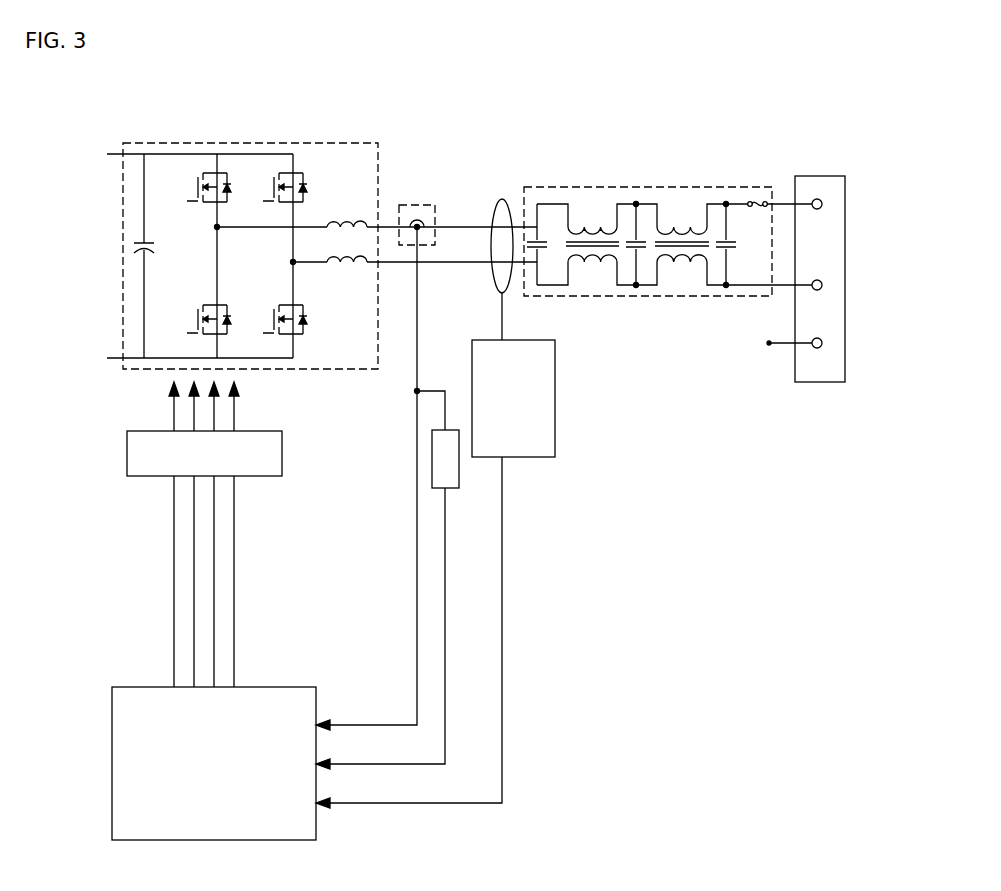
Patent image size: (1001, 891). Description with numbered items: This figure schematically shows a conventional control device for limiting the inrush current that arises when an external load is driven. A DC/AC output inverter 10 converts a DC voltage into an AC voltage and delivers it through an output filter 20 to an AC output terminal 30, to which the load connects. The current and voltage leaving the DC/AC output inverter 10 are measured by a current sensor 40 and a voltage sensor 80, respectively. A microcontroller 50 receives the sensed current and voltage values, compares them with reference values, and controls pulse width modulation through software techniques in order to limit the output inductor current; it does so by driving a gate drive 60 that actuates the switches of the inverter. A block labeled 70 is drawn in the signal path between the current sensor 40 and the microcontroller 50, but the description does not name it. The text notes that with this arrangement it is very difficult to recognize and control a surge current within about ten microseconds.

The DC/AC output inverter 10 is at (316, 143).
The output filter 20 is at (652, 187).
The AC output terminal 30 is at (820, 176).
The current sensor 40 is at (428, 205).
The microcontroller 50 is at (112, 753).
The gate drive 60 is at (127, 457).
The low pass filter 70 is at (432, 465).
The voltage sensor 80 is at (555, 398).